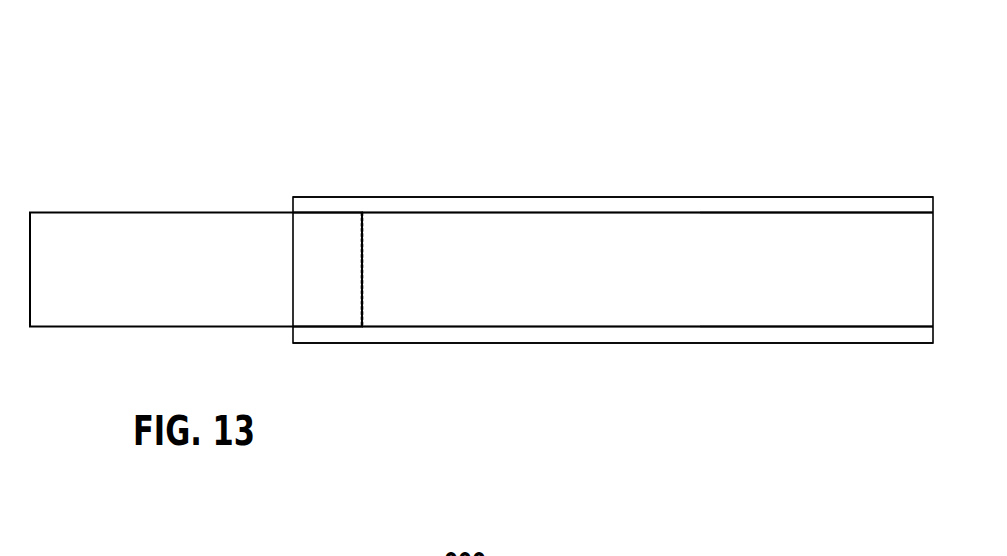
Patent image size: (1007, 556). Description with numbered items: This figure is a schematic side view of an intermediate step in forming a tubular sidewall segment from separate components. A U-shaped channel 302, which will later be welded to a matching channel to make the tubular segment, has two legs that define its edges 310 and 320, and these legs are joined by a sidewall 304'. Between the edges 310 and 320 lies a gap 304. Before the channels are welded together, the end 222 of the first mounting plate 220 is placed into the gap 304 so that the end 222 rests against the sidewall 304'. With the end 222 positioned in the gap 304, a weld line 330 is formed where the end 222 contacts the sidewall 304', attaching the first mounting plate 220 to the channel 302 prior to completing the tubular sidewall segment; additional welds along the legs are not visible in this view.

The first mounting plate 220 is at (207, 285).
The end of the first mounting plate 222 is at (358, 262).
The U-shaped channel 302 is at (664, 157).
The gap 304 is at (647, 331).
The sidewall 304' is at (800, 317).
The edge 310 is at (768, 205).
The edge 320 is at (793, 335).
The weld line 330 is at (364, 280).